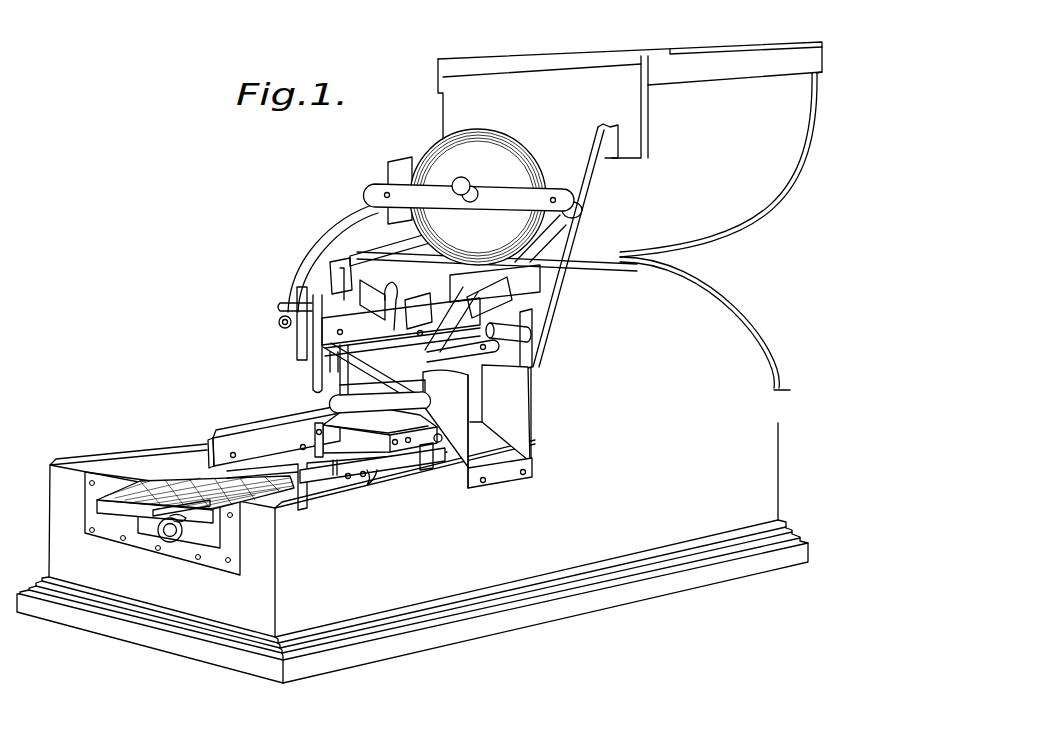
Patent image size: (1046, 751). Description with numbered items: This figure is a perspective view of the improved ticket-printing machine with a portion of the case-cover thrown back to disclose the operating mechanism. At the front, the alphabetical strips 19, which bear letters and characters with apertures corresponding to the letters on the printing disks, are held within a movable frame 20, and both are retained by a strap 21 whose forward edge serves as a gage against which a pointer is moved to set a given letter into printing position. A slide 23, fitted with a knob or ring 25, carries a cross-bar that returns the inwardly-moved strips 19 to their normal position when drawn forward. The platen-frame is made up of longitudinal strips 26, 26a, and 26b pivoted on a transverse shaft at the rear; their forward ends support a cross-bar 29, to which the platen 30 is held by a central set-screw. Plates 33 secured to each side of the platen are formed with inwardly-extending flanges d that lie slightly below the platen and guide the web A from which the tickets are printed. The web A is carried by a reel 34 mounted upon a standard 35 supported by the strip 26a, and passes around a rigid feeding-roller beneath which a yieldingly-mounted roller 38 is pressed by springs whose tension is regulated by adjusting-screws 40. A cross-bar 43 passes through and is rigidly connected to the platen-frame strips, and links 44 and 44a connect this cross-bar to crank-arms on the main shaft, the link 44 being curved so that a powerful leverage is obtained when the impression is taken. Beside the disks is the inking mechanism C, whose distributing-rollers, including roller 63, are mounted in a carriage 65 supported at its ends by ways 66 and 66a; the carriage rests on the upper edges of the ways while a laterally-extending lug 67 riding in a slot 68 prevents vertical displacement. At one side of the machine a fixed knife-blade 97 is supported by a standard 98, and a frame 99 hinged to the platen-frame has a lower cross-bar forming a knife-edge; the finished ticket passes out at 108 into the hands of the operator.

The web A is at (351, 224).
The inking mechanism C is at (482, 259).
The inwardly-extending flanges d is at (338, 363).
The strips 19 is at (197, 488).
The movable frame 20 is at (116, 510).
The strap 21 is at (273, 478).
The slide 23 is at (180, 519).
The knob or ring 25 is at (168, 544).
The platen-frame strip 26 is at (341, 284).
The platen-frame strip 26a is at (402, 317).
The platen-frame strip 26b is at (505, 306).
The cross-bar 29 is at (390, 302).
The platen 30 is at (392, 347).
The plates 33 is at (355, 346).
The reel 34 is at (469, 197).
The standard 35 is at (470, 276).
The yieldingly-mounted roller 38 is at (305, 373).
The adjusting-screws 40 is at (298, 358).
The cross-bar 43 is at (510, 333).
The link 44 is at (336, 376).
The link 44a is at (544, 338).
The distributing-roller 63 is at (379, 396).
The carriage 65 is at (378, 430).
The ways 66 is at (397, 470).
The ways 66a is at (233, 436).
The laterally-extending lug 67 is at (396, 456).
The slot 68 is at (373, 482).
The fixed knife-blade 97 is at (444, 372).
The standard 98 is at (486, 357).
The frame 99 is at (452, 326).
The side plate 108 is at (500, 426).